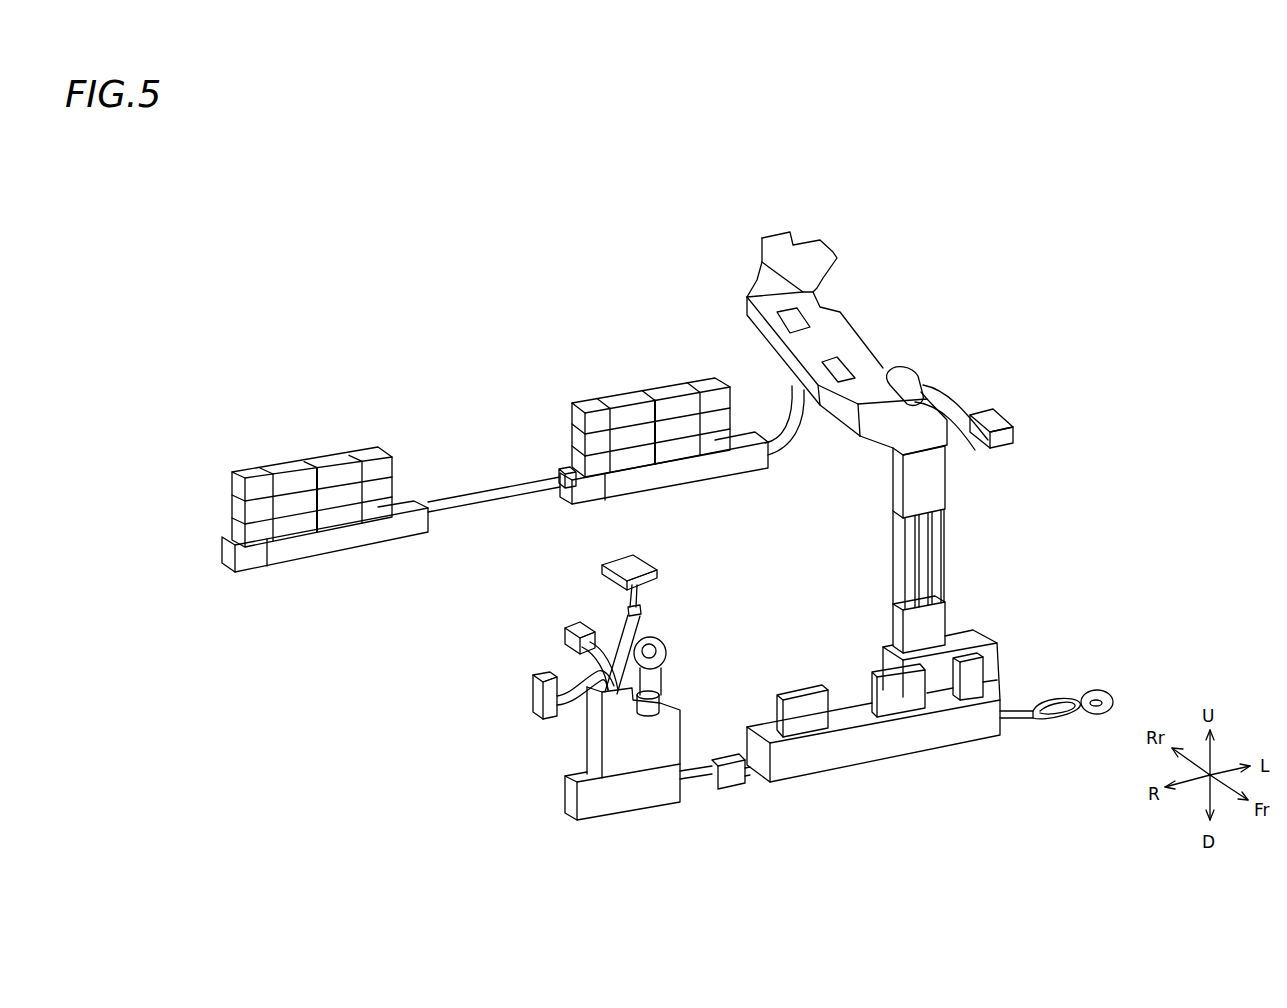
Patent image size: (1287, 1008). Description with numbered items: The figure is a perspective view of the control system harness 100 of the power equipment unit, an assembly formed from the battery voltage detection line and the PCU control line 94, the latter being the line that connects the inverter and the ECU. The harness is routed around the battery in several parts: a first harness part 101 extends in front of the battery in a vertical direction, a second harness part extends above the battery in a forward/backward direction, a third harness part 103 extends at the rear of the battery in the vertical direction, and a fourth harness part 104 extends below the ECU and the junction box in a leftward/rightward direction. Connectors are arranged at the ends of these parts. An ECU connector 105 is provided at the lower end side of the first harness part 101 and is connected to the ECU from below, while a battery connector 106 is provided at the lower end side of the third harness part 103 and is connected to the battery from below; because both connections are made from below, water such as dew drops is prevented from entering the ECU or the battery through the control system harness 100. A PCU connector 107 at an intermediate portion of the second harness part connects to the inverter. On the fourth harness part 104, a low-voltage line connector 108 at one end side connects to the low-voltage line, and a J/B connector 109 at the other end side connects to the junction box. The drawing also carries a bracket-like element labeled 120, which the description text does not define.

The control system harness 100 is at (908, 162).
The first harness part 101 is at (922, 567).
The third harness part 103 is at (780, 393).
The fourth harness part 104 is at (712, 779).
The ECU connector 105 is at (905, 698).
The battery connector 106 is at (585, 415).
The PCU connector 107 is at (1010, 415).
The low-voltage line connector 108 is at (1086, 715).
The J/B connector 109 is at (537, 673).
The bracket 120 is at (830, 340).
The PCU control line 94 is at (945, 380).